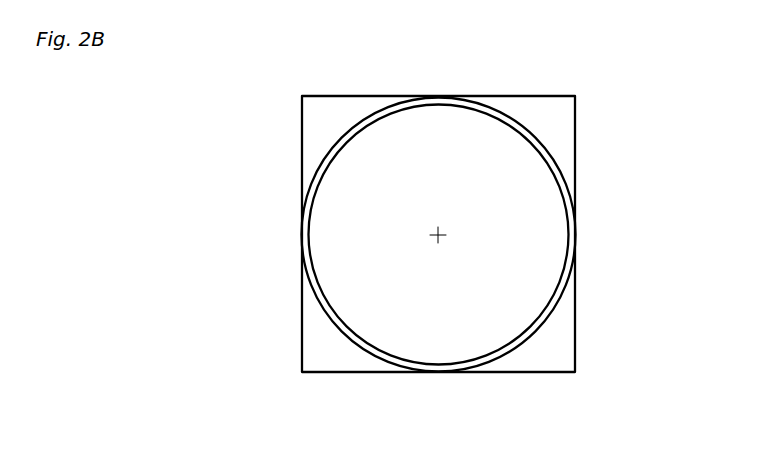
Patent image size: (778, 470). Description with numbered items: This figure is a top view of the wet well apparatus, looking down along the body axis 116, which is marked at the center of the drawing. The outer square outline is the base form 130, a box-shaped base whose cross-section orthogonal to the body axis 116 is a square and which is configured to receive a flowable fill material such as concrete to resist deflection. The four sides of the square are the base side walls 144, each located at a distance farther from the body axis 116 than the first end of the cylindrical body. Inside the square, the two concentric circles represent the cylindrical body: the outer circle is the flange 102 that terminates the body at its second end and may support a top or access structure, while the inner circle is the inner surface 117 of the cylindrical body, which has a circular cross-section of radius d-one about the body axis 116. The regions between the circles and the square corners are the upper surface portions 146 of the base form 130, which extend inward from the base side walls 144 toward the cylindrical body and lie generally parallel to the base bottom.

The base form 130 is at (582, 127).
The base side walls 144 is at (538, 96).
The inner surface 117 is at (355, 138).
The flange 102 is at (563, 195).
The body axis 116 is at (438, 237).
The upper surface portions 146 is at (315, 137).